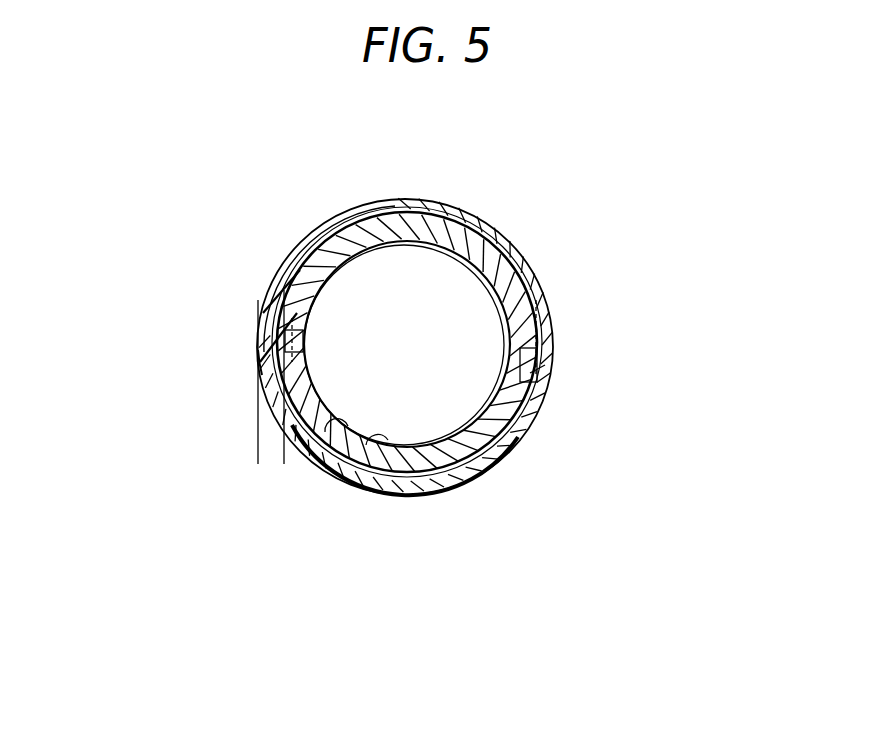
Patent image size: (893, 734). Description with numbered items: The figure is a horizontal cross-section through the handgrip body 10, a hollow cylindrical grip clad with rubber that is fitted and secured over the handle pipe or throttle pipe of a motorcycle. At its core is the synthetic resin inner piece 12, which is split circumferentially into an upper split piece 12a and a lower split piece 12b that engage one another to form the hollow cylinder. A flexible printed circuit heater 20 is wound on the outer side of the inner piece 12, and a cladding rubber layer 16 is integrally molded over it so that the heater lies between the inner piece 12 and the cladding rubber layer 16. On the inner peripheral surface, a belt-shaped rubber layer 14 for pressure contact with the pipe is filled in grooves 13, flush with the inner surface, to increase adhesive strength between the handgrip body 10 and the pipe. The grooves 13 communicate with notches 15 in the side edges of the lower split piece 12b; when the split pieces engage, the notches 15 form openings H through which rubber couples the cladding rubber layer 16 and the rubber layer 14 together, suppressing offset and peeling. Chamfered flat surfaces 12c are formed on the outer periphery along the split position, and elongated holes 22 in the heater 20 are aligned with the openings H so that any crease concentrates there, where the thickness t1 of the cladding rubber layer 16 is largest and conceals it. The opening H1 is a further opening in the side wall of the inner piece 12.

The handgrip body 10 is at (541, 227).
The inner piece 12 is at (757, 257).
The upper split piece 12a is at (530, 265).
The lower split piece 12b is at (530, 410).
The chamfered flat surface 12c is at (260, 387).
The grooves 13 is at (327, 443).
The belt-shaped rubber layer 14 is at (380, 463).
The notches 15 is at (284, 345).
The cladding rubber layer 16 is at (467, 210).
The flexible printed circuit heater 20 is at (360, 220).
The elongated holes 22 is at (285, 354).
The openings H is at (530, 340).
The opening H1 is at (287, 333).
The thickness of the cladding rubber layer t1 is at (290, 458).